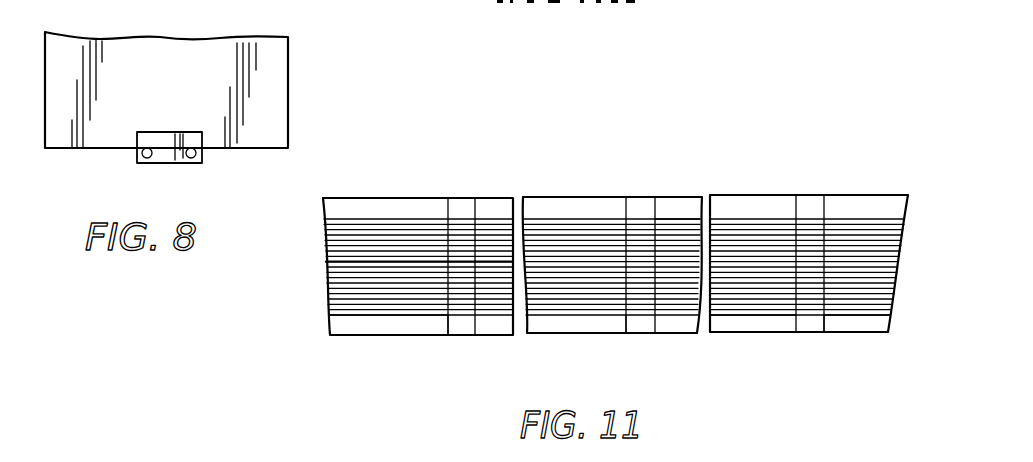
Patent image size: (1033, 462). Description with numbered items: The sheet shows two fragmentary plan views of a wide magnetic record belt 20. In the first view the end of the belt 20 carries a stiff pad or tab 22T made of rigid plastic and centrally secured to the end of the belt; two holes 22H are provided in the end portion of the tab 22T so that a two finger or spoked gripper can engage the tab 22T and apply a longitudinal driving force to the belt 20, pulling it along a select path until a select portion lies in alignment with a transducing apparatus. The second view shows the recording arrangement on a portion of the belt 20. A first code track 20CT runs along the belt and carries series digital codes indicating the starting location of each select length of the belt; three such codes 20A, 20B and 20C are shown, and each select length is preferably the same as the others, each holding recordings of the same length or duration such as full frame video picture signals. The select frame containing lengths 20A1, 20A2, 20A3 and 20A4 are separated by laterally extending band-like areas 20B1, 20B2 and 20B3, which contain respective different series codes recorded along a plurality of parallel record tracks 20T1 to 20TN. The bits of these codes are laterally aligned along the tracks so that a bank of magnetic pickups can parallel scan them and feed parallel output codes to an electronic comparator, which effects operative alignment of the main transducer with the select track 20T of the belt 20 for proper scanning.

In FIG. 8, the record belt 20 is at (297, 76).
In FIG. 11, the record belt 20 is at (314, 333).
In FIG. 8, the stiff pad 22T is at (147, 159).
In FIG. 8, the holes 22H is at (194, 159).
In FIG. 11, the select track 20T is at (337, 261).
In FIG. 11, the select frame containing length 20A1 is at (410, 213).
In FIG. 11, the band-like area 20B1 is at (460, 215).
In FIG. 11, the first code track 20CT is at (415, 317).
In FIG. 11, the series digital code 20A is at (445, 325).
In FIG. 11, the select frame containing length 20A2 is at (588, 213).
In FIG. 11, the band-like area 20B2 is at (643, 217).
In FIG. 11, the record track 20TN is at (667, 218).
In FIG. 11, the series digital code 20B is at (623, 323).
In FIG. 11, the select frame containing length 20A3 is at (782, 213).
In FIG. 11, the band-like area 20B3 is at (812, 212).
In FIG. 11, the select frame containing length 20A4 is at (858, 213).
In FIG. 11, the series digital code 20C is at (793, 320).
In FIG. 11, the record track 20T1 is at (838, 302).